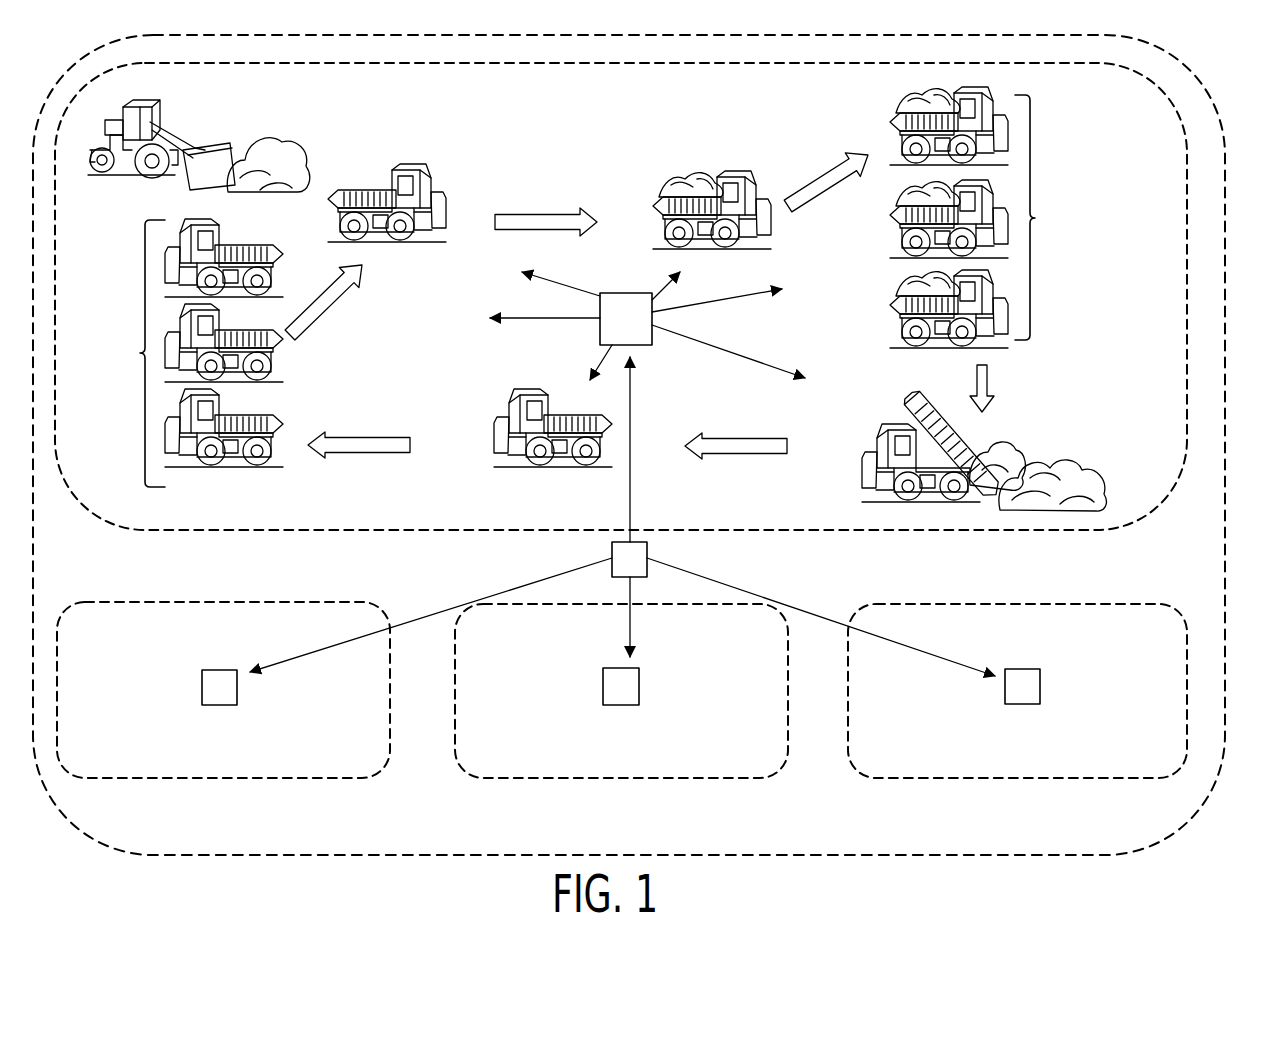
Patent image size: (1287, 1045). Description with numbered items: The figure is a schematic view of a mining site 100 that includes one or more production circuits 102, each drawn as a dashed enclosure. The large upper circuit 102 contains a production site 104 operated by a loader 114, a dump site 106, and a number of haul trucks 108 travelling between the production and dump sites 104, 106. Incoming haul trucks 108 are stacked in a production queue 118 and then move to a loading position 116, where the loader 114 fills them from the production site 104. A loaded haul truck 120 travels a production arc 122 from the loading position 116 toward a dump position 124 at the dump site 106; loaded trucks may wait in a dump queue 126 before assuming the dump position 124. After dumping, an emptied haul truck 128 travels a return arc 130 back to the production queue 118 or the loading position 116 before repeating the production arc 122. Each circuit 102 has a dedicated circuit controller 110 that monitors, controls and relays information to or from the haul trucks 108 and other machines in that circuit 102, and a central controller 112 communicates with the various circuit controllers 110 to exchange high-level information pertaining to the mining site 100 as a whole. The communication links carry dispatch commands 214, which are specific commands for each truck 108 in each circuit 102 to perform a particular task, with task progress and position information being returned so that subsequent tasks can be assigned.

The mining site 100 is at (1202, 795).
The production circuit 102 is at (1000, 530).
The production site 104 is at (280, 140).
The dump site 106 is at (1087, 467).
The haul truck 108 is at (667, 165).
The circuit controller 110 is at (632, 292).
The central controller 112 is at (650, 545).
The loader 114 is at (150, 118).
The loading position 116 is at (393, 180).
The production queue 118 is at (140, 353).
The loaded haul truck 120 is at (742, 178).
The production arc 122 is at (527, 206).
The dump position 124 is at (1003, 440).
The dump queue 126 is at (1035, 218).
The emptied haul truck 128 is at (497, 455).
The return arc 130 is at (317, 322).
The dispatch command 214 is at (717, 347).